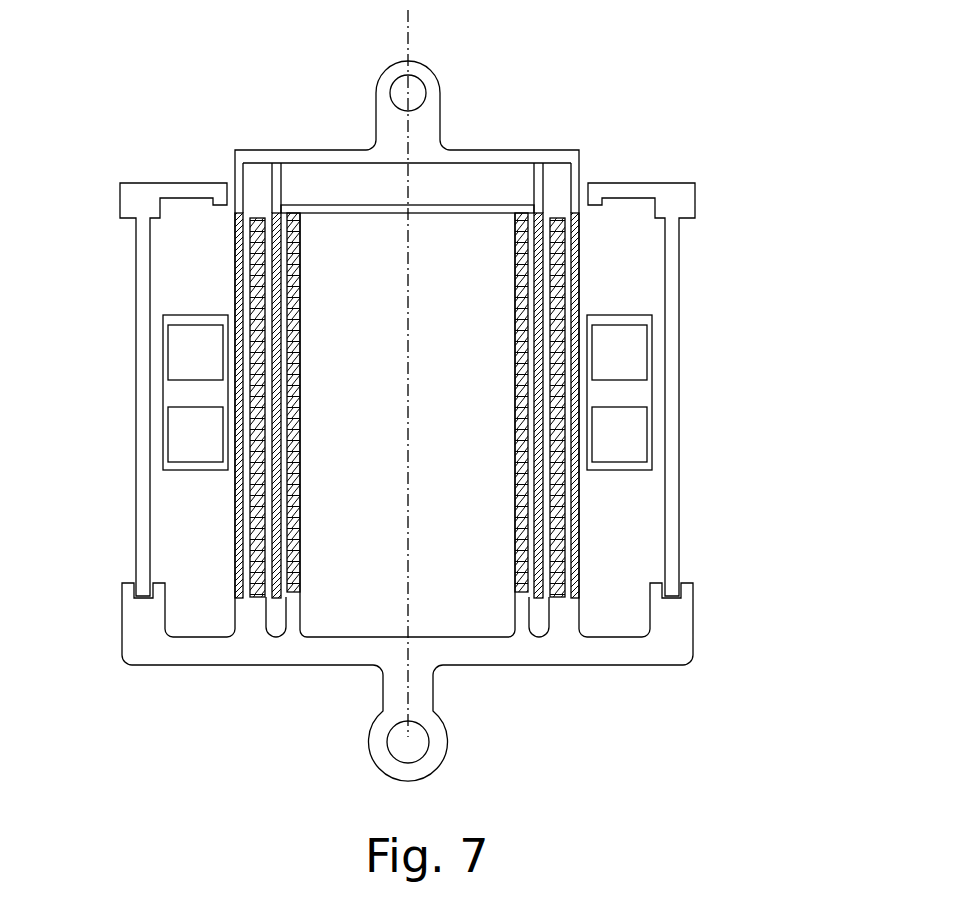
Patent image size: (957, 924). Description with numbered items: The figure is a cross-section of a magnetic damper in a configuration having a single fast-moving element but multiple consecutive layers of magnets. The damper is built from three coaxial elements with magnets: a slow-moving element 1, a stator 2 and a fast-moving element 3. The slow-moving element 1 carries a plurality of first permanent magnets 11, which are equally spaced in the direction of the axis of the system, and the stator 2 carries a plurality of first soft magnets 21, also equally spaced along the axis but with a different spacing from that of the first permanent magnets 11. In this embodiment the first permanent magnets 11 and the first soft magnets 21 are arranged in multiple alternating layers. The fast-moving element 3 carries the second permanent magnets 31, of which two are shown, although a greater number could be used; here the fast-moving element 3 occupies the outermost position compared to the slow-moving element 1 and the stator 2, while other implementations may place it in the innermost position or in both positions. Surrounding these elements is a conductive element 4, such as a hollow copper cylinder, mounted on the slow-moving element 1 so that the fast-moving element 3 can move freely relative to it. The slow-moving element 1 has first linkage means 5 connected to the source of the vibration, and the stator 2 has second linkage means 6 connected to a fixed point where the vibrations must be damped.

The slow-moving element 1 is at (208, 668).
The stator 2 is at (322, 146).
The first soft magnets 21 is at (259, 227).
The first permanent magnets 11 is at (528, 585).
The fast-moving element 3 is at (643, 304).
The second permanent magnets 31 is at (662, 353).
The conductive element 4 is at (129, 449).
The first linkage means 5 is at (451, 766).
The second linkage means 6 is at (452, 57).